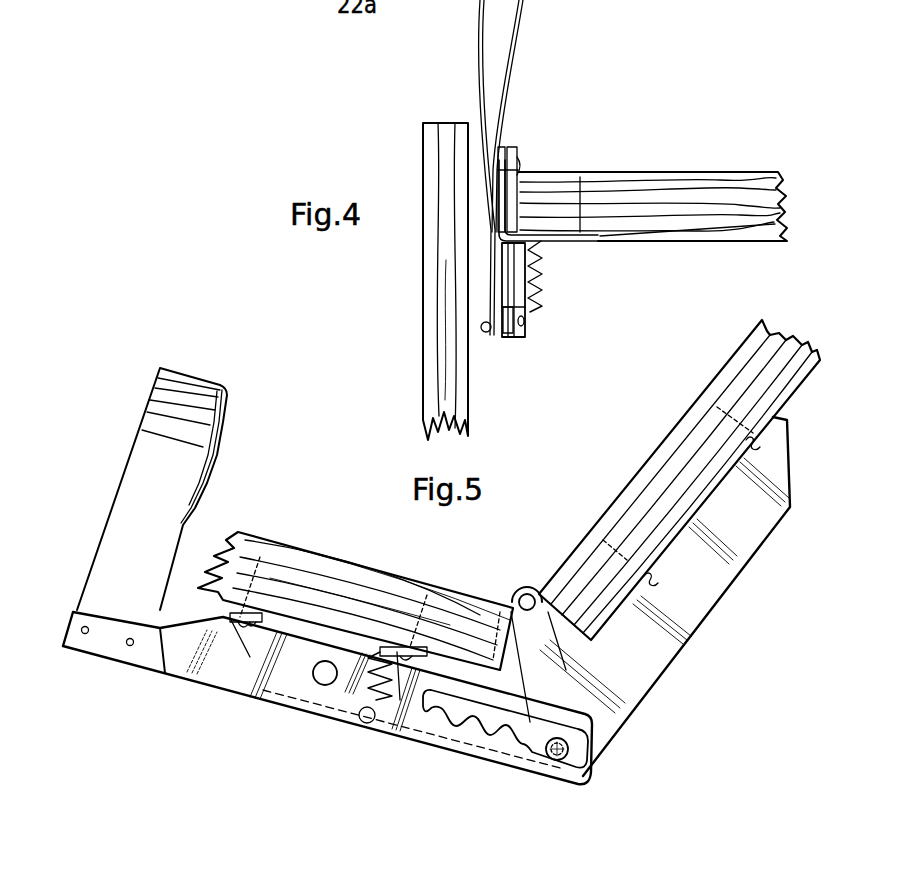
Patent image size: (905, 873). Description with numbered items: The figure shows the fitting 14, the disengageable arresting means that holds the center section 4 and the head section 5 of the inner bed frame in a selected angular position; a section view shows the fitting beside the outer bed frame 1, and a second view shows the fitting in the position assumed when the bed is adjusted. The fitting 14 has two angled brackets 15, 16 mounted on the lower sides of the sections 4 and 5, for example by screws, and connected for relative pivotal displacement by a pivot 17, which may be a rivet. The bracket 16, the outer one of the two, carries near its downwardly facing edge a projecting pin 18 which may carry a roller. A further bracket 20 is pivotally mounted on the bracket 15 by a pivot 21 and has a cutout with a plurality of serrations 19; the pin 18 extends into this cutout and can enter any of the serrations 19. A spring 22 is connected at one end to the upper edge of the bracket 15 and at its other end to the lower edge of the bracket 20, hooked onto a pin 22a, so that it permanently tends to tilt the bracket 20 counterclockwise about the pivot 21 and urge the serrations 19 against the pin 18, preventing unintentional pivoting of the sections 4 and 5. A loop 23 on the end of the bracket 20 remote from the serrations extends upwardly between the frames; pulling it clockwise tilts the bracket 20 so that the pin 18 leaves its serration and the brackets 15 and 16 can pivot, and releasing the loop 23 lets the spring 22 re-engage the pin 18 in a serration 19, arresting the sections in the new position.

In FIG. 4, the support or bed frame 1 is at (440, 173).
In FIG. 5, the center section 4 is at (353, 577).
In FIG. 5, the head section 5 is at (667, 453).
In FIG. 4, the fitting 14 is at (522, 349).
In FIG. 5, the fitting 14 is at (589, 786).
In FIG. 5, the angled bracket 15 is at (293, 623).
In FIG. 5, the angled bracket 16 is at (697, 597).
In FIG. 4, the pivot 17 is at (520, 163).
In FIG. 5, the pivot 17 is at (527, 594).
In FIG. 5, the projecting pin 18 is at (568, 749).
In FIG. 5, the serrations 19 is at (492, 731).
In FIG. 5, the bracket 20 is at (208, 667).
In FIG. 5, the pivot 21 is at (317, 673).
In FIG. 4, the spring 22 is at (541, 252).
In FIG. 5, the spring 22 is at (373, 685).
In FIG. 5, the pin 22a is at (367, 723).
In FIG. 4, the handle or loop 23 is at (522, 33).
In FIG. 5, the handle or loop 23 is at (140, 443).